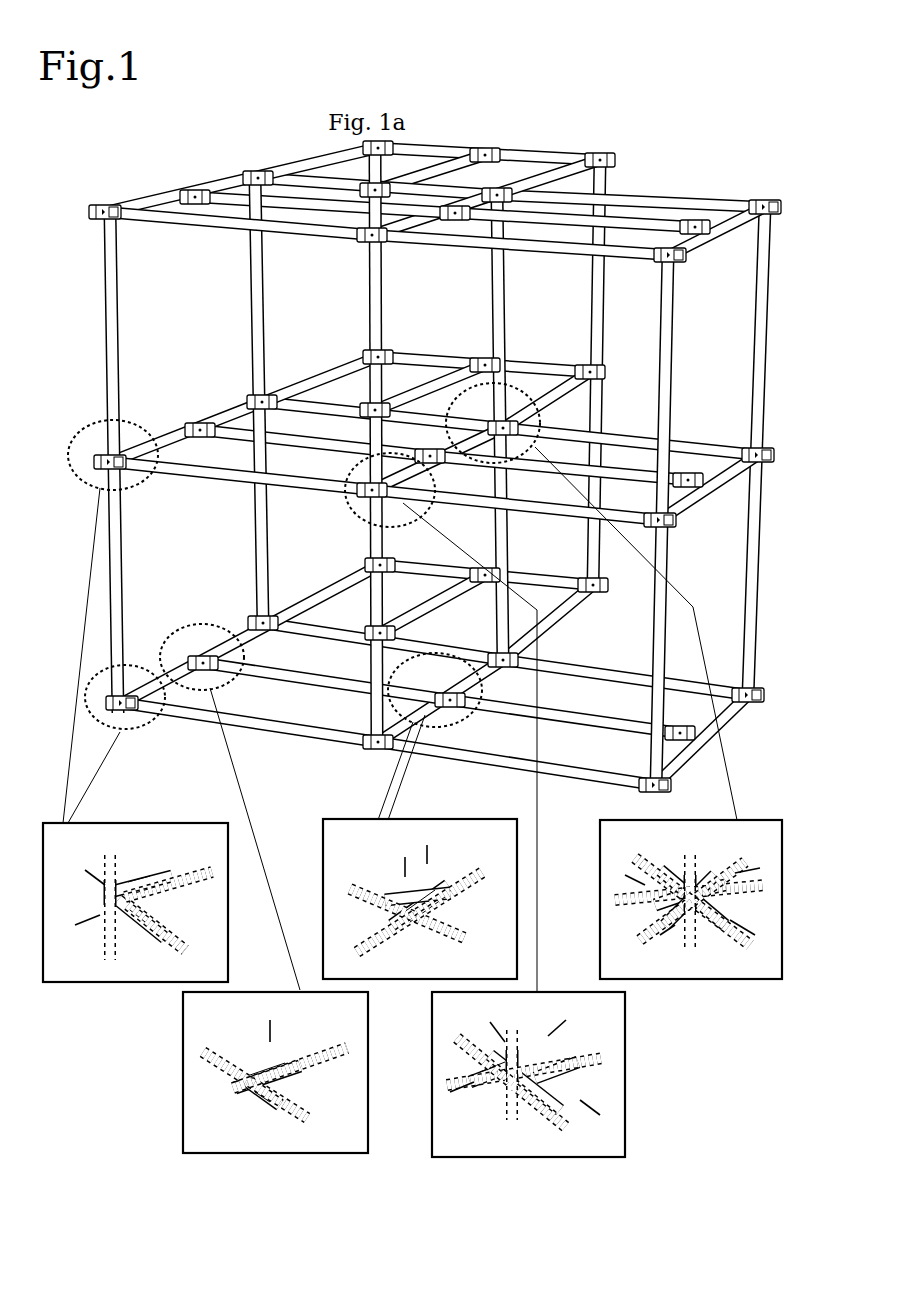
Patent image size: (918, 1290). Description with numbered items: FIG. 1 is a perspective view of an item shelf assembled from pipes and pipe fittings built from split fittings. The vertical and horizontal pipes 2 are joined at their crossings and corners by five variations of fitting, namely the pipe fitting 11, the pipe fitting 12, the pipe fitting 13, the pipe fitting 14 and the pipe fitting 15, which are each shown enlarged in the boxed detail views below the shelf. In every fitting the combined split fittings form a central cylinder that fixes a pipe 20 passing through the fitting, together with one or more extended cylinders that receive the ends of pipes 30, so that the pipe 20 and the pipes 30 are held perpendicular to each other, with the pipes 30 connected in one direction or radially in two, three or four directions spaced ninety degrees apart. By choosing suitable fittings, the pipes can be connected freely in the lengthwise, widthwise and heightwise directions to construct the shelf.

The tube 2 is at (106, 332).
The pipe fitting 11 is at (98, 232).
The pipe fitting 12 is at (193, 420).
The pipe fitting 13 is at (452, 715).
The pipe fitting 14 is at (270, 382).
The pipe fitting 15 is at (475, 411).
The pipe 20 is at (417, 972).
The pipe 30 is at (444, 989).